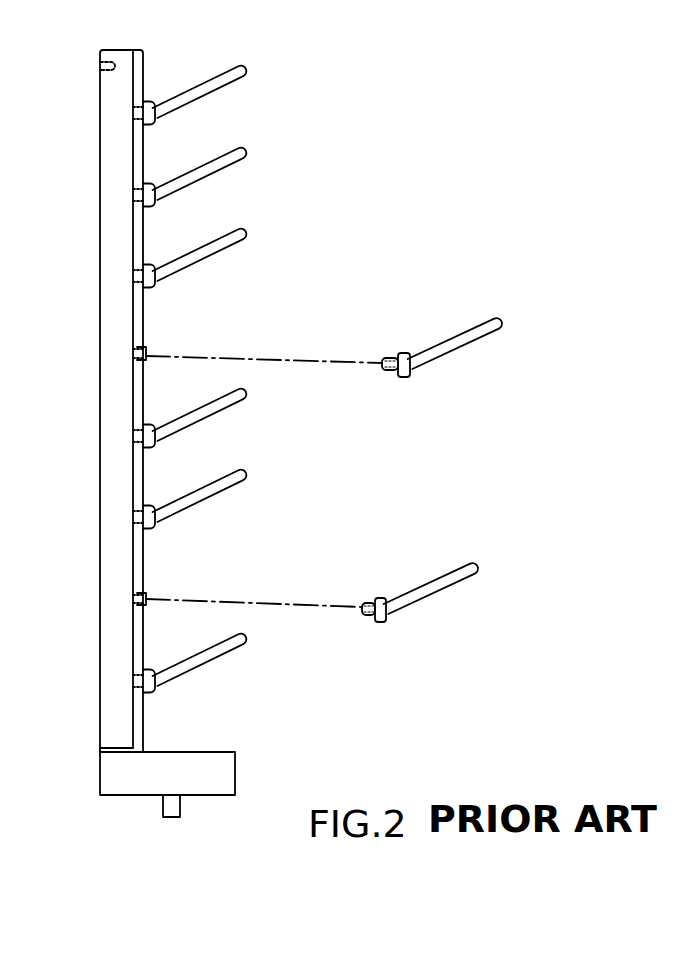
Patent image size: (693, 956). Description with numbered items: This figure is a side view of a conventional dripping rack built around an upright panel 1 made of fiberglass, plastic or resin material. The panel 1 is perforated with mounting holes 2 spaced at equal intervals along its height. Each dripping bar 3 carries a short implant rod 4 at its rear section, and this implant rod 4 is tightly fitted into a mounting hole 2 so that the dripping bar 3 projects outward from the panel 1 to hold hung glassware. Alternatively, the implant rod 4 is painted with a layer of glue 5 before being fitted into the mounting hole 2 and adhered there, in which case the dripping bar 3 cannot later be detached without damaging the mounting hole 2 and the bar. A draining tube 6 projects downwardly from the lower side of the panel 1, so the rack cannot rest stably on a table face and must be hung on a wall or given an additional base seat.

The upright panel 1 is at (82, 398).
The mounting hole 2 is at (146, 347).
The dripping bar 3 is at (237, 398).
The implant rod 4 is at (386, 358).
The layer of glue 5 is at (389, 378).
The draining tube 6 is at (178, 809).